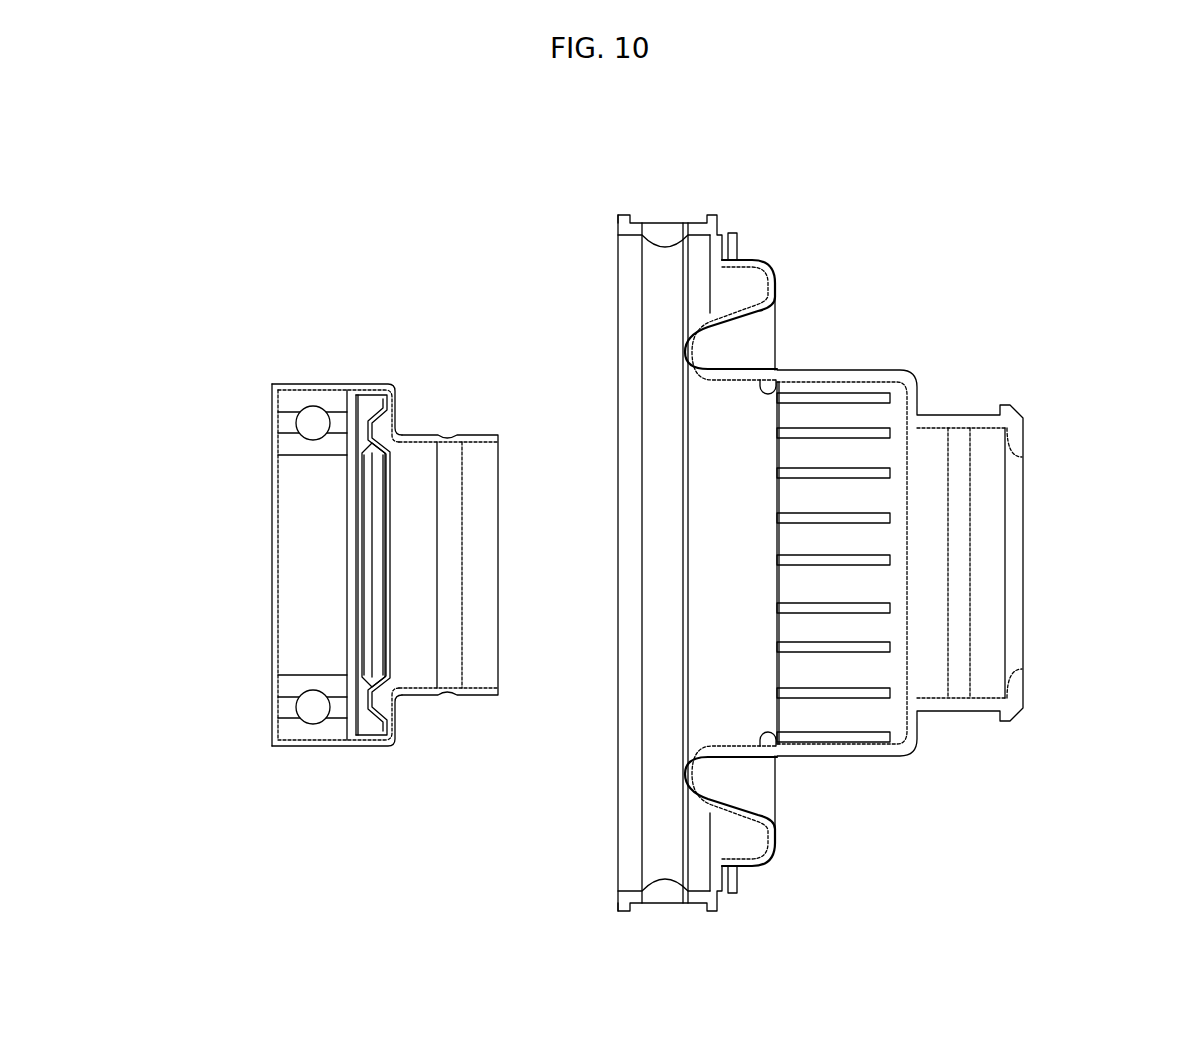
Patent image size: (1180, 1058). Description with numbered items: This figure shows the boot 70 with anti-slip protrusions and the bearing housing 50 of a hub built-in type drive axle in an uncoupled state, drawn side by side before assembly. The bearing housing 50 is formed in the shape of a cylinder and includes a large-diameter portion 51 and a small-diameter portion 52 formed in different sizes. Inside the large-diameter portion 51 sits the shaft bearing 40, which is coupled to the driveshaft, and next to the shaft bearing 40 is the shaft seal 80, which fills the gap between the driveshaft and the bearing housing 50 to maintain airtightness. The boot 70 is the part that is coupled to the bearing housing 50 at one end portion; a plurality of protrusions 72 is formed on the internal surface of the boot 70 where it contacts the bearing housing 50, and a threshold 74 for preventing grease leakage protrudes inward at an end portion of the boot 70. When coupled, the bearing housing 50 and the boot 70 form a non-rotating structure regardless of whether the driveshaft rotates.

The shaft bearing 40 is at (290, 445).
The bearing housing 50 is at (373, 376).
The large-diameter portion 51 is at (305, 384).
The small-diameter portion 52 is at (481, 435).
The boot 70 is at (977, 423).
The protrusions 72 is at (855, 607).
The threshold 74 is at (767, 392).
The shaft seal 80 is at (375, 593).